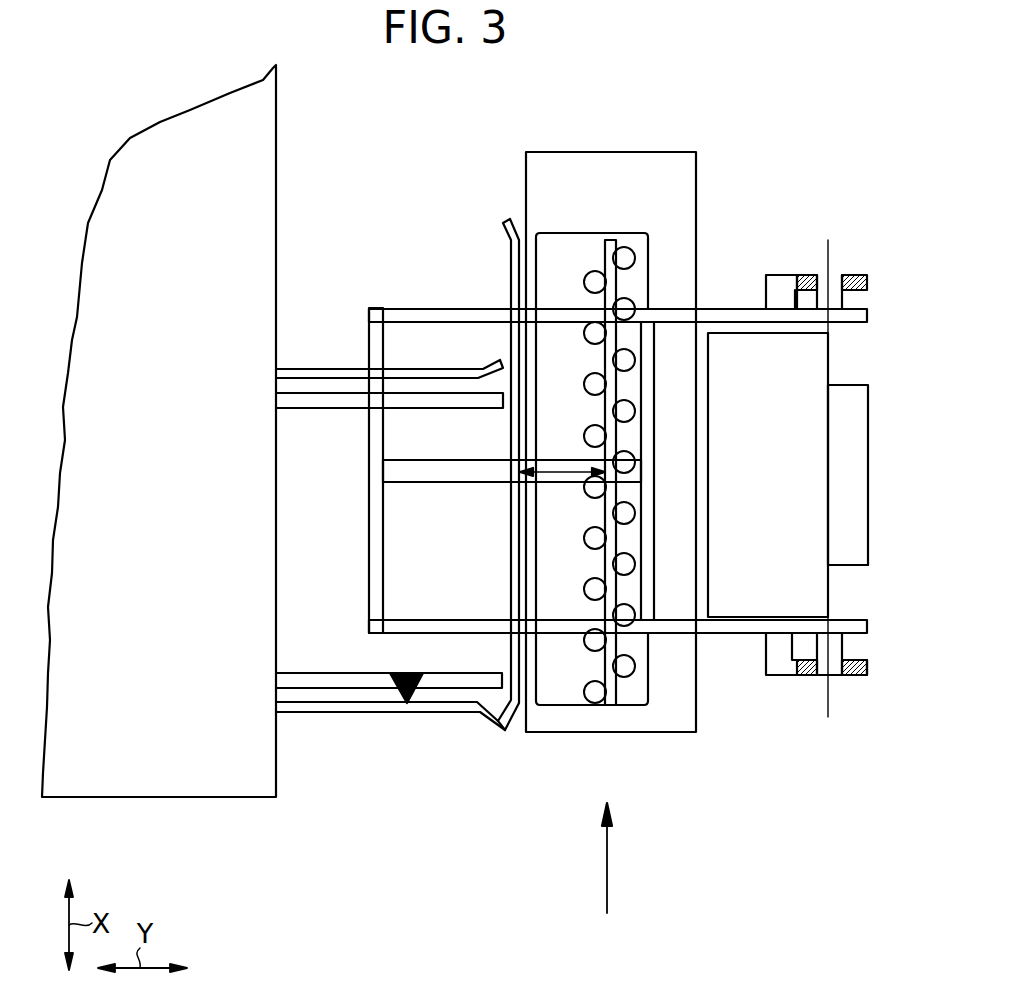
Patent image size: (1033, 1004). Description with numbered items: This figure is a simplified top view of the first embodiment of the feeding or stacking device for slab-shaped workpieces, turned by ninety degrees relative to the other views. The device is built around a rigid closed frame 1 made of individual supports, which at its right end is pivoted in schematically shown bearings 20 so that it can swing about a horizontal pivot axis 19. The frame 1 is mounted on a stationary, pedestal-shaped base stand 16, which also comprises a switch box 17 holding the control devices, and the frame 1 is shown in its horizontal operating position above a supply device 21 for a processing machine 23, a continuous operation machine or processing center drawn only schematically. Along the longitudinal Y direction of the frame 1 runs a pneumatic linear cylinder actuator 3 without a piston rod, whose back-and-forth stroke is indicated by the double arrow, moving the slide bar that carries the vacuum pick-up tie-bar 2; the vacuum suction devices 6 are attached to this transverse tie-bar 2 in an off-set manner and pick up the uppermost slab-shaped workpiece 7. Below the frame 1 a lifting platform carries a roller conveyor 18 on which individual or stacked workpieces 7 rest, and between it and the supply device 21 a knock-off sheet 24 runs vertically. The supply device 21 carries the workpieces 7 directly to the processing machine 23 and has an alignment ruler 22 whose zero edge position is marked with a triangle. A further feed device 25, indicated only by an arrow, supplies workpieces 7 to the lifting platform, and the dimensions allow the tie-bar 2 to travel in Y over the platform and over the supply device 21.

The frame 1 is at (650, 360).
The vacuum pick-up tie-bar 2 is at (612, 283).
The linear cylinder actuator 3 is at (452, 472).
The vacuum suction devices 6 is at (597, 692).
The slab-shaped workpieces 7 is at (558, 685).
The base stand 16 is at (813, 418).
The switch box 17 is at (850, 500).
The roller conveyor 18 is at (685, 590).
The horizontal pivot axis 19 is at (828, 250).
The bearings 20 is at (867, 282).
The supply device 21 is at (315, 680).
The alignment ruler 22 is at (407, 703).
The processing machine 23 is at (182, 765).
The knock-off sheet 24 is at (512, 258).
The feed device 25 is at (607, 870).